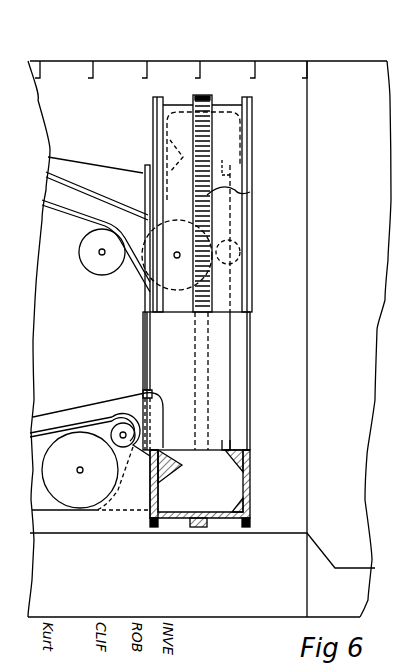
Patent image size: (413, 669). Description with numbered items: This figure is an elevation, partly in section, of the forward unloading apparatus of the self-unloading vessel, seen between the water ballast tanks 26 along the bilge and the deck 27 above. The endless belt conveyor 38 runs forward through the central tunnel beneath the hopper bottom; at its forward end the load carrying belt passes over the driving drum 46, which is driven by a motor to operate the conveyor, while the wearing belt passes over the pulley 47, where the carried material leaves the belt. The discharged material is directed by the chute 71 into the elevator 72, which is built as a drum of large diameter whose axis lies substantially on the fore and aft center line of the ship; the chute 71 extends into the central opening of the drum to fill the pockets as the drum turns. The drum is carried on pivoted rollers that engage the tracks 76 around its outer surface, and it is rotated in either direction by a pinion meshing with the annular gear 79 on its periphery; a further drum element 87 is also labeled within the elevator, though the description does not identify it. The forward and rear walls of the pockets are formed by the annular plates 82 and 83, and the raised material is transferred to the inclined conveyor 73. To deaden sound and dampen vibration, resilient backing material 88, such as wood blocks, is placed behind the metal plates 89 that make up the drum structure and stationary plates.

The water ballast tanks 26 is at (180, 590).
The deck 27 is at (268, 61).
The endless belt conveyor 38 is at (50, 432).
The driving drum 46 is at (78, 500).
The pulley 47 is at (110, 420).
The chute 71 is at (112, 393).
The elevator 72 is at (250, 156).
The inclined conveyor 73 is at (93, 194).
The tracks 76 is at (153, 526).
The annular gear 79 is at (207, 95).
The annular plate 82 is at (250, 484).
The annular plate 83 is at (150, 497).
The gear 87 is at (207, 195).
The resilient backing material 88 is at (170, 472).
The metal plates 89 is at (240, 501).